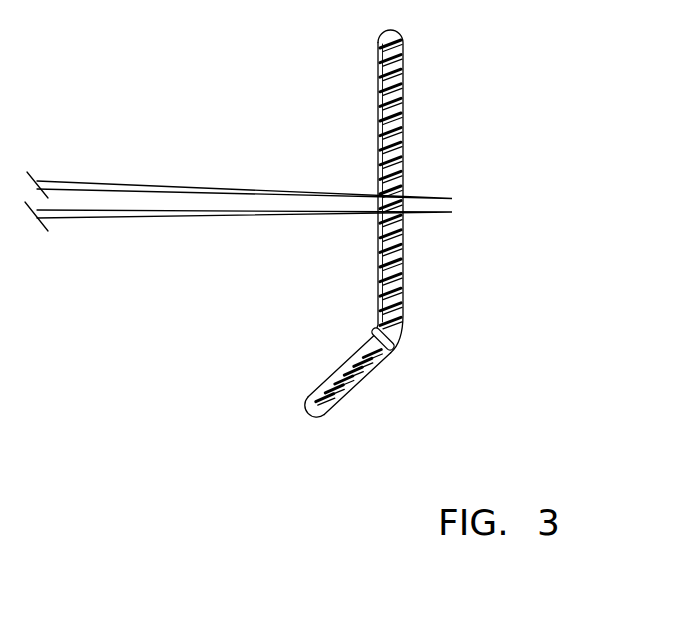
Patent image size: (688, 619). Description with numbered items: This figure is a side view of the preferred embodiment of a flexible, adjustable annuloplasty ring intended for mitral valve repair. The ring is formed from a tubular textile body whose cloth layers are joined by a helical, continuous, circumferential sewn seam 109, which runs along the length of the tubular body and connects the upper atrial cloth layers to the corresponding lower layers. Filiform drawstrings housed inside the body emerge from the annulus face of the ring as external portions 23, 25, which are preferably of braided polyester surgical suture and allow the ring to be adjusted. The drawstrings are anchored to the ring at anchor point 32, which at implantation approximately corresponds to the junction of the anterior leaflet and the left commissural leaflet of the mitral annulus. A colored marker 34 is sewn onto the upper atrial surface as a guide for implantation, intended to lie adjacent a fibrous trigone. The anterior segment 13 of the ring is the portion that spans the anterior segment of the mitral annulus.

The helical circumferential sewn seam 109 is at (378, 100).
The external portion of filiform string 25 is at (247, 187).
The external portion of filiform string 23 is at (173, 220).
The anchor point 32 is at (373, 330).
The colored marker 34 is at (356, 358).
The anterior segment 13 is at (312, 418).